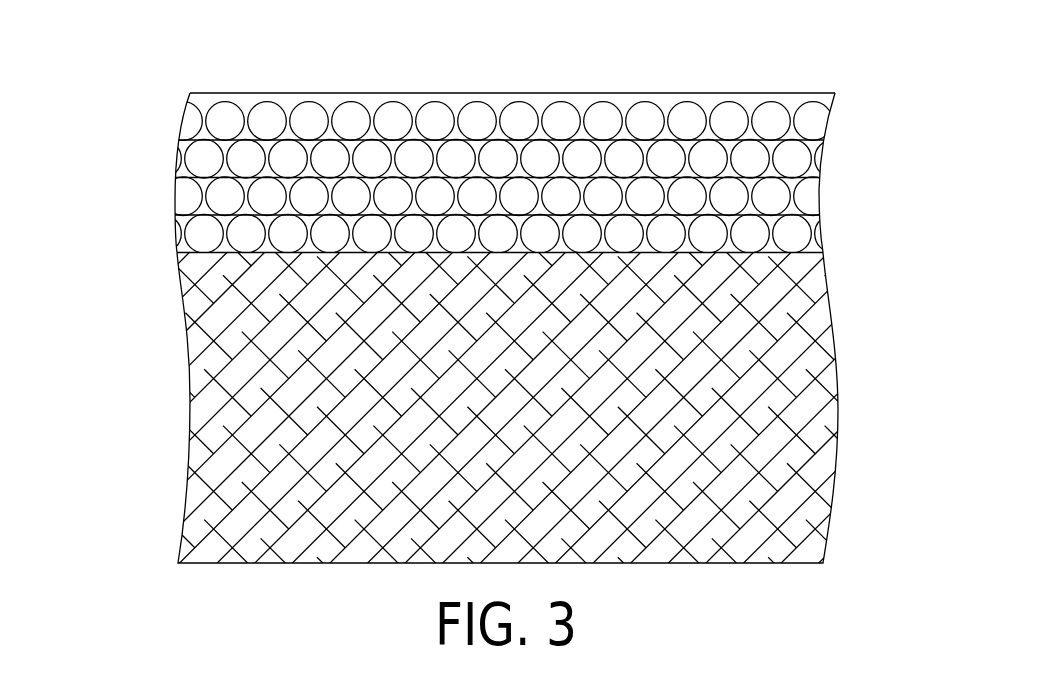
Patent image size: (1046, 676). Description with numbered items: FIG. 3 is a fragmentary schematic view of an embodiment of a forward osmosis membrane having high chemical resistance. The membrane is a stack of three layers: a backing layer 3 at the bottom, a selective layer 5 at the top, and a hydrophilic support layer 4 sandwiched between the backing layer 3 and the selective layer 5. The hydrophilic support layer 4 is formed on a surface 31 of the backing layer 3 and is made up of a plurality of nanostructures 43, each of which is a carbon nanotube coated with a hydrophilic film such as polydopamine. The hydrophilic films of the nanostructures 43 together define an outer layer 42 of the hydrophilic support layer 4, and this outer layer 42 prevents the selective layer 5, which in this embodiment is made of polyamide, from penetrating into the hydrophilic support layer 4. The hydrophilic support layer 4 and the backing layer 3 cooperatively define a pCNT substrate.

The backing layer 3 is at (828, 378).
The surface of the backing layer 31 is at (815, 256).
The hydrophilic support layer 4 is at (158, 150).
The outer layer 42 is at (782, 102).
The nanostructures 43 is at (795, 162).
The selective layer 5 is at (708, 93).